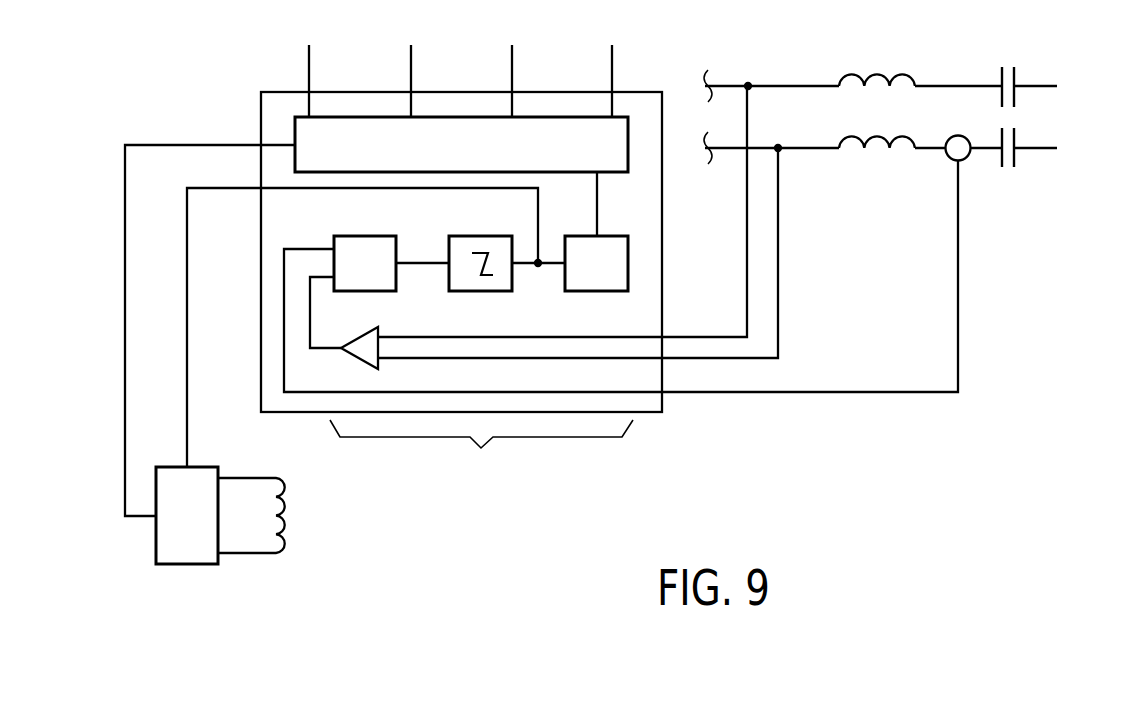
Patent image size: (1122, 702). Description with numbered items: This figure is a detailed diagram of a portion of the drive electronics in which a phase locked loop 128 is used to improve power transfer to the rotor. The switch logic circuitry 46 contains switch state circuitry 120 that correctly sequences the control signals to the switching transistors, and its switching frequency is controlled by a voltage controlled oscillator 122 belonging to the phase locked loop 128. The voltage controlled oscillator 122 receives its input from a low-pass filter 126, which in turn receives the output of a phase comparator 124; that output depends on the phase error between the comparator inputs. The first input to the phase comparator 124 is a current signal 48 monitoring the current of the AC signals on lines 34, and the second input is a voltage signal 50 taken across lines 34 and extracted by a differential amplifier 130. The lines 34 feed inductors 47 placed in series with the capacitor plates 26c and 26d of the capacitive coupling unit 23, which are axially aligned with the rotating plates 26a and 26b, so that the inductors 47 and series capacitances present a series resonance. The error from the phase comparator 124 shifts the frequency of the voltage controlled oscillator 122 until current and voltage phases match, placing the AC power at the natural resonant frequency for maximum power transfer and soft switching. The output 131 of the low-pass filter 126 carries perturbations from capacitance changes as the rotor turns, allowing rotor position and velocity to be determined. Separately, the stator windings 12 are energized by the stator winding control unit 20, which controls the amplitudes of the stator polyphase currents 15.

The stator windings 12 is at (282, 567).
The stator polyphase currents 15 is at (125, 255).
The stator winding control unit 20 is at (202, 528).
The capacitive coupling unit 23 is at (994, 63).
The annular capacitor plate 26a is at (1000, 98).
The annular capacitor plate 26b is at (1000, 160).
The annular capacitor plate 26c is at (1016, 98).
The annular capacitor plate 26d is at (1016, 160).
The lines 34 is at (734, 148).
The switch logic circuitry 46 is at (240, 98).
The inductors 47 is at (873, 136).
The current signal 48 is at (883, 392).
The voltage signal 50 is at (747, 275).
The switch state circuitry 120 is at (481, 159).
The voltage controlled oscillator 122 is at (581, 291).
The phase comparator 124 is at (350, 236).
The low-pass filter 126 is at (465, 236).
The phase locked loop 128 is at (481, 453).
The differential amplifier 130 is at (368, 328).
The output 131 is at (187, 338).